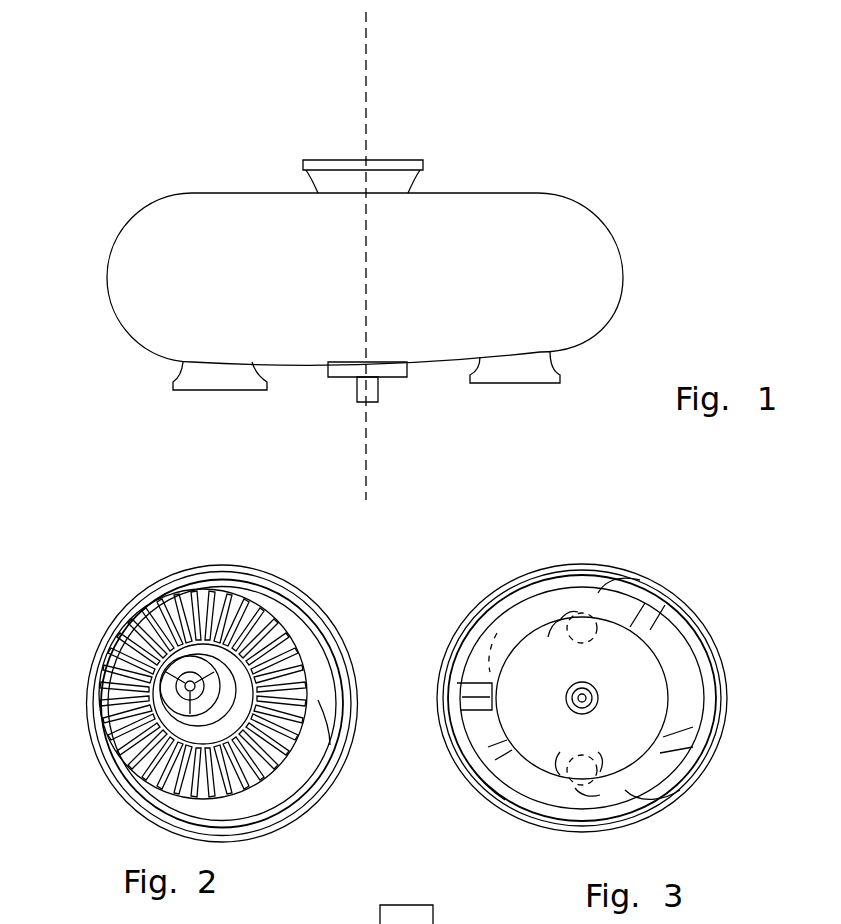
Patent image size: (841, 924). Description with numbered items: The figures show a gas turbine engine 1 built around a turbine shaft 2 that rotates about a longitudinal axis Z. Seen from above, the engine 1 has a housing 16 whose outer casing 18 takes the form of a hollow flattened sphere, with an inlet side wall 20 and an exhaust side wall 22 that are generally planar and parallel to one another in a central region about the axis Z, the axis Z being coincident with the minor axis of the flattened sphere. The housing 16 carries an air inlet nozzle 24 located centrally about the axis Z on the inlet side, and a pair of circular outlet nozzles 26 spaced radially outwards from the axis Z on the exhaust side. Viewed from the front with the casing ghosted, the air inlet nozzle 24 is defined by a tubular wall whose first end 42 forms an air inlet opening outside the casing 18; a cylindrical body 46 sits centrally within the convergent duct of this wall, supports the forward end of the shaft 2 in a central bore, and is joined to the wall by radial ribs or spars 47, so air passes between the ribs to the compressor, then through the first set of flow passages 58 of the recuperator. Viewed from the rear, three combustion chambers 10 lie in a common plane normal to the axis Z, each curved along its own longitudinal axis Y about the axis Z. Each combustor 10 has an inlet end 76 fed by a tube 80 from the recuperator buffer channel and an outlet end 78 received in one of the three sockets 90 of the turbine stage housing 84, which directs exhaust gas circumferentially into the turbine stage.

In FIG. 1, the engine 1 is at (573, 130).
In FIG. 2, the engine 1 is at (100, 647).
In FIG. 3, the engine 1 is at (695, 610).
In FIG. 1, the turbine shaft 2 is at (376, 390).
In FIG. 1, the housing 16 is at (567, 218).
In FIG. 1, the outer casing 18 is at (138, 310).
In FIG. 1, the inlet side wall 20 is at (200, 195).
In FIG. 1, the exhaust side wall 22 is at (294, 365).
In FIG. 1, the air inlet nozzle 24 is at (413, 160).
In FIG. 2, the air inlet nozzle 24 is at (163, 713).
In FIG. 1, the outlet nozzles 26 is at (193, 392).
In FIG. 3, the outlet nozzles 26 is at (600, 790).
In FIG. 2, the combustion chambers 10 is at (330, 660).
In FIG. 3, the combustion chambers 10 is at (683, 655).
In FIG. 2, the first end 42 is at (150, 735).
In FIG. 2, the cylindrical body 46 is at (215, 705).
In FIG. 2, the radial ribs or spars 47 is at (160, 603).
In FIG. 2, the first set of flow passages 58 is at (230, 640).
In FIG. 3, the inlet end 76 is at (660, 592).
In FIG. 3, the outlet end 78 is at (548, 605).
In FIG. 2, the tube 80 is at (325, 733).
In FIG. 3, the tube 80 is at (622, 600).
In FIG. 3, the turbine stage housing 84 is at (643, 697).
In FIG. 3, the sockets 90 is at (468, 775).
In FIG. 1, the longitudinal axis Z is at (363, 30).
In FIG. 3, the longitudinal axis of combustor Y is at (528, 617).